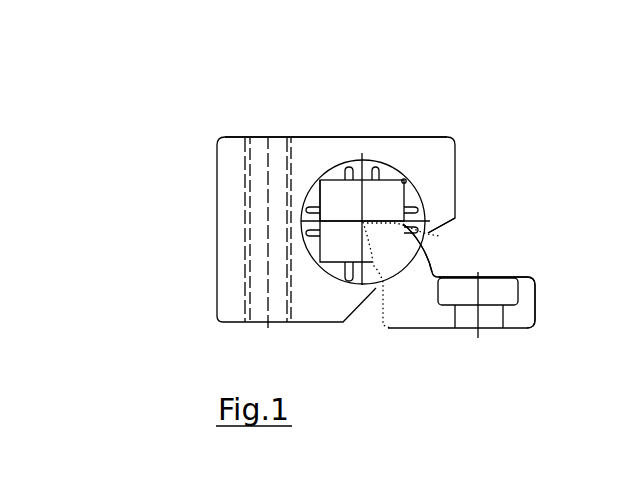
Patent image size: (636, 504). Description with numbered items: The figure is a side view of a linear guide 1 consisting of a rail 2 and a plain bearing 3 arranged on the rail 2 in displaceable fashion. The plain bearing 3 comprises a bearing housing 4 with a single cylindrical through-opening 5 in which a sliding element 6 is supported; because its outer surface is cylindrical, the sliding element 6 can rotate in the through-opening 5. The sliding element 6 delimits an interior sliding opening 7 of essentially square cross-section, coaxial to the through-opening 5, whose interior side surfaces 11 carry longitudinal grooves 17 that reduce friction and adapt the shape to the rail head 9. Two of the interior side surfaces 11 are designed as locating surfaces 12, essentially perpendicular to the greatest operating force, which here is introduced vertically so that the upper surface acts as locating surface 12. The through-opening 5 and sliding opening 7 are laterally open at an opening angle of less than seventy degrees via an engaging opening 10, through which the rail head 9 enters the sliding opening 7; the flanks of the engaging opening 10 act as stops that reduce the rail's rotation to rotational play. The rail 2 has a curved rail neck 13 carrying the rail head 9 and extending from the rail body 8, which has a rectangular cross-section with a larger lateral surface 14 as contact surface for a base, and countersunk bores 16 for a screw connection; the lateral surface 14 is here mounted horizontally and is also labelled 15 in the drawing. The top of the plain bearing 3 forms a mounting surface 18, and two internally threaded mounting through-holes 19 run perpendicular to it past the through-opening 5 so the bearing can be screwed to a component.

The linear guide 1 is at (129, 120).
The rail 2 is at (555, 240).
The plain bearing 3 is at (214, 109).
The bearing housing 4 is at (232, 157).
The through-opening 5 is at (320, 185).
The sliding element 6 is at (309, 212).
The sliding opening 7 is at (318, 248).
The interior side surfaces 11 is at (263, 245).
The rail body 8 is at (445, 313).
The rail head 9 is at (332, 248).
The engaging opening 10 is at (468, 207).
The locating surfaces 12 is at (330, 163).
The rail neck 13 is at (398, 277).
The lateral surface 14 is at (536, 342).
The groove 15 is at (523, 338).
The countersunk bores 16 is at (487, 308).
The longitudinal grooves 17 is at (405, 179).
The mounting surface 18 is at (415, 122).
The mounting through-holes 19 is at (251, 292).